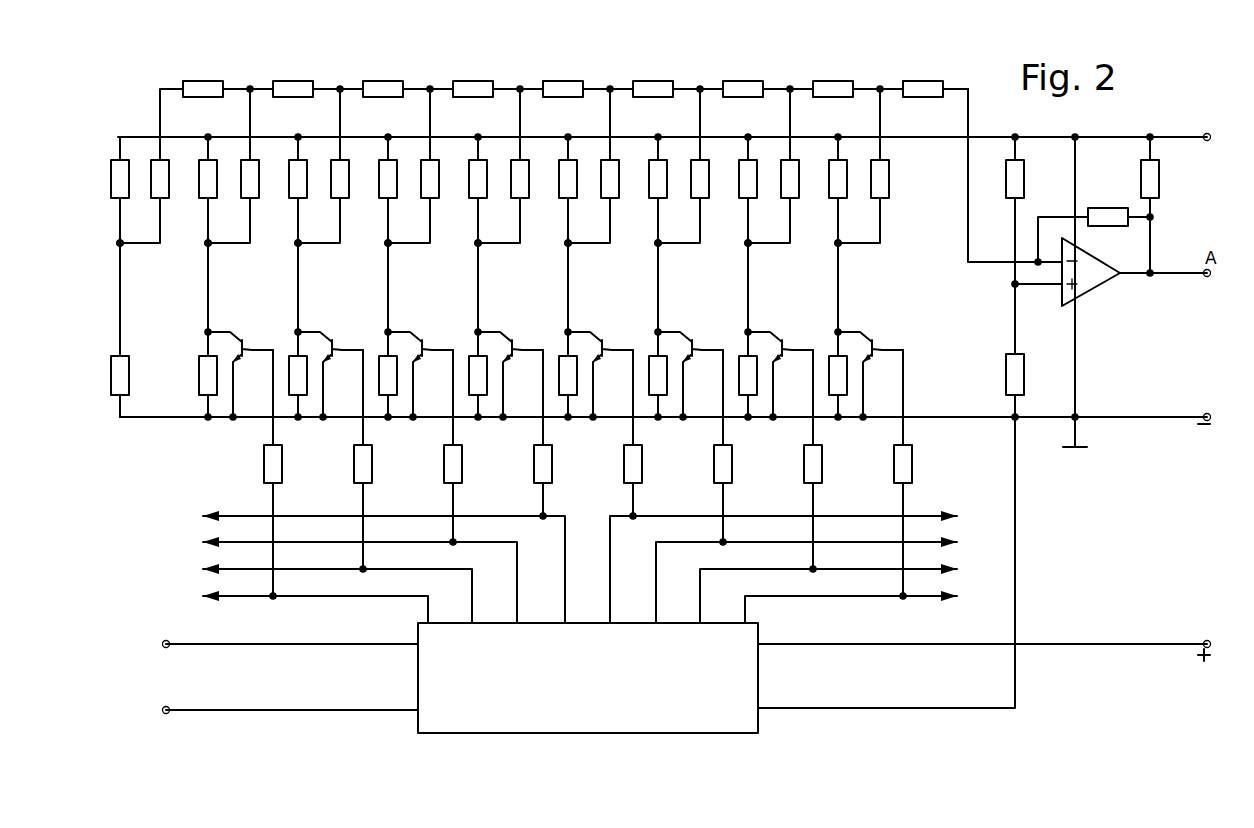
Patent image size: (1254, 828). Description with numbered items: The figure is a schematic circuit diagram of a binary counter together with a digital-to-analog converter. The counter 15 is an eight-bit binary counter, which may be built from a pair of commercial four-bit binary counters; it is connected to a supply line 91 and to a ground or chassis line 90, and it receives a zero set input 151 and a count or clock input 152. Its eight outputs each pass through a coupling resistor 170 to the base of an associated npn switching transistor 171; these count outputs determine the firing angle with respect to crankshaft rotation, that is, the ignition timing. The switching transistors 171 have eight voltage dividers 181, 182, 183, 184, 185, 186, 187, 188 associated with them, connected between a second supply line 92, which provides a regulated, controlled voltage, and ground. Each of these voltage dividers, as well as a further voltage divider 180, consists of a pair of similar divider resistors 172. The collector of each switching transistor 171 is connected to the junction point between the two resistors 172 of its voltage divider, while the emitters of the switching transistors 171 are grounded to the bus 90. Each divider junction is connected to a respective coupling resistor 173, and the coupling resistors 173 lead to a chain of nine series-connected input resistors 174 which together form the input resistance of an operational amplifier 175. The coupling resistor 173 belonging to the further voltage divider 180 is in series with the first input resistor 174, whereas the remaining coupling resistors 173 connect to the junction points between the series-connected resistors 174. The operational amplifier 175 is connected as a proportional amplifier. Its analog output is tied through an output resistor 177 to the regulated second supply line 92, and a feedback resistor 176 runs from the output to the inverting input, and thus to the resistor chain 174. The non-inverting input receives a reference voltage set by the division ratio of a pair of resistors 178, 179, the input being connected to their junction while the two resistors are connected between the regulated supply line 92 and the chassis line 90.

The counter 15 is at (758, 675).
The ground or chassis line 90 is at (145, 420).
The supply line 91 is at (1146, 644).
The second supply line 92 is at (666, 122).
The zero set input 151 is at (176, 641).
The count or clock input 152 is at (176, 708).
The coupling resistor 170 is at (264, 464).
The npn switching transistor 171 is at (245, 368).
The divider resistor 172 is at (112, 190).
The coupling resistor 173 is at (155, 196).
The input resistor 174 is at (283, 82).
The operational amplifier 175 is at (1097, 283).
The feedback resistor 176 is at (1107, 210).
The output resistor 177 is at (1159, 185).
The resistor 178 is at (1008, 196).
The resistor 179 is at (1006, 370).
The further voltage divider 180 is at (130, 251).
The voltage divider 181 is at (201, 250).
The voltage divider 182 is at (291, 250).
The voltage divider 183 is at (381, 250).
The voltage divider 184 is at (471, 250).
The voltage divider 185 is at (561, 250).
The voltage divider 186 is at (651, 250).
The voltage divider 187 is at (741, 250).
The voltage divider 188 is at (831, 250).